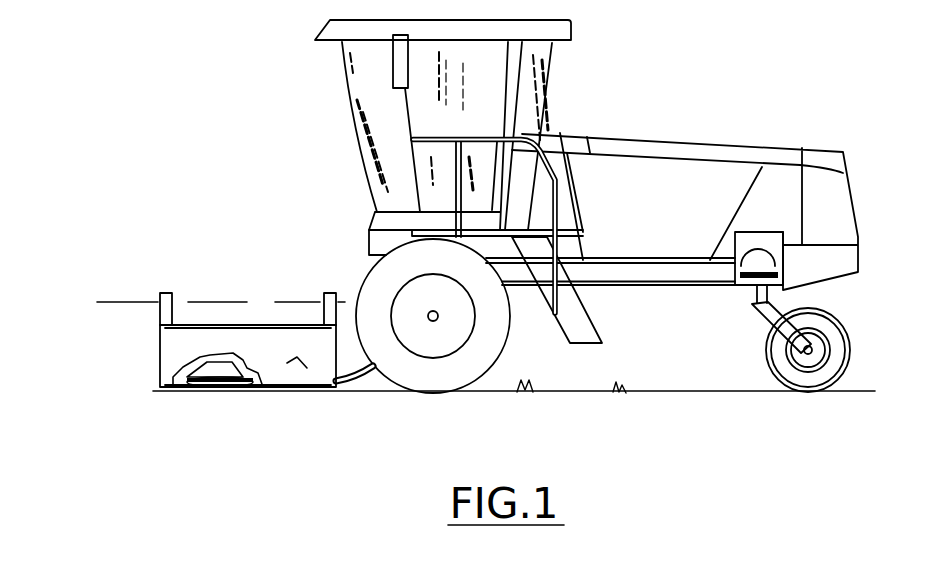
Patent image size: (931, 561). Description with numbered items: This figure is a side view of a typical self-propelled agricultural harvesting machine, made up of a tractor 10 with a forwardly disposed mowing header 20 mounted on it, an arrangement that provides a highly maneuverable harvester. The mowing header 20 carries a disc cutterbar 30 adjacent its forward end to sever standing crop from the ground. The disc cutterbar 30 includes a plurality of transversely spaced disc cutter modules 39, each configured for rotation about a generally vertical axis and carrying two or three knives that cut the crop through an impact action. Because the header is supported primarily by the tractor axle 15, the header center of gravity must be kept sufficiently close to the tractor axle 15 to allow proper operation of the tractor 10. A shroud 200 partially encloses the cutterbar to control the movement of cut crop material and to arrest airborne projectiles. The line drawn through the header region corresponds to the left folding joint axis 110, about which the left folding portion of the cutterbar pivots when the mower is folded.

The tractor 10 is at (607, 134).
The tractor axle 15 is at (430, 377).
The mowing header 20 is at (262, 312).
The disc cutterbar 30 is at (220, 427).
The disc cutter module 39 is at (207, 363).
The left folding joint axis 110 is at (128, 302).
The shroud 200 is at (293, 367).